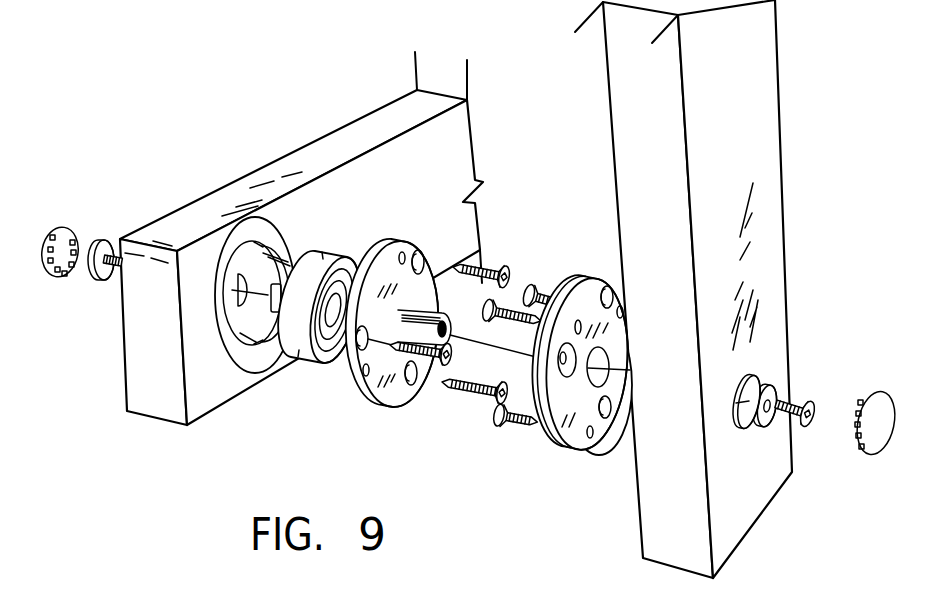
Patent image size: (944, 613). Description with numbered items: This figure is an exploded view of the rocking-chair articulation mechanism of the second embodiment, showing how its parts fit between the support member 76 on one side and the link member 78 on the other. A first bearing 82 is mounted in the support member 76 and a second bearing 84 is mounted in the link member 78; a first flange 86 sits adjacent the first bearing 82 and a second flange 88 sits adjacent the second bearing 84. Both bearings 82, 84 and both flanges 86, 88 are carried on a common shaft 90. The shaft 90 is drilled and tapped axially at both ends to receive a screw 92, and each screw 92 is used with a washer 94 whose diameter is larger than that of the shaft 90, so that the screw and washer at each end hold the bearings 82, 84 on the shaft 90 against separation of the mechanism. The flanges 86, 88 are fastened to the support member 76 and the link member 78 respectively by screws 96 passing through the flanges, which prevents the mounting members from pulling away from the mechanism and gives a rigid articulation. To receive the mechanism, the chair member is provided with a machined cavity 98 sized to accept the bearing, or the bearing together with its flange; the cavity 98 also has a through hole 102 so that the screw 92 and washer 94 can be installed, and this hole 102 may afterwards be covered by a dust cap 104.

The support member 76 is at (318, 153).
The link member 78 is at (772, 132).
The first bearing 82 is at (313, 265).
The second bearing 84 is at (626, 408).
The first flange 86 is at (352, 390).
The second flange 88 is at (575, 448).
The shaft 90 is at (393, 357).
The screw 92 is at (100, 237).
The washer 94 is at (772, 388).
The screws 96 is at (537, 287).
The machined cavity 98 is at (247, 355).
The through hole 102 is at (740, 413).
The dust cap 104 is at (50, 275).